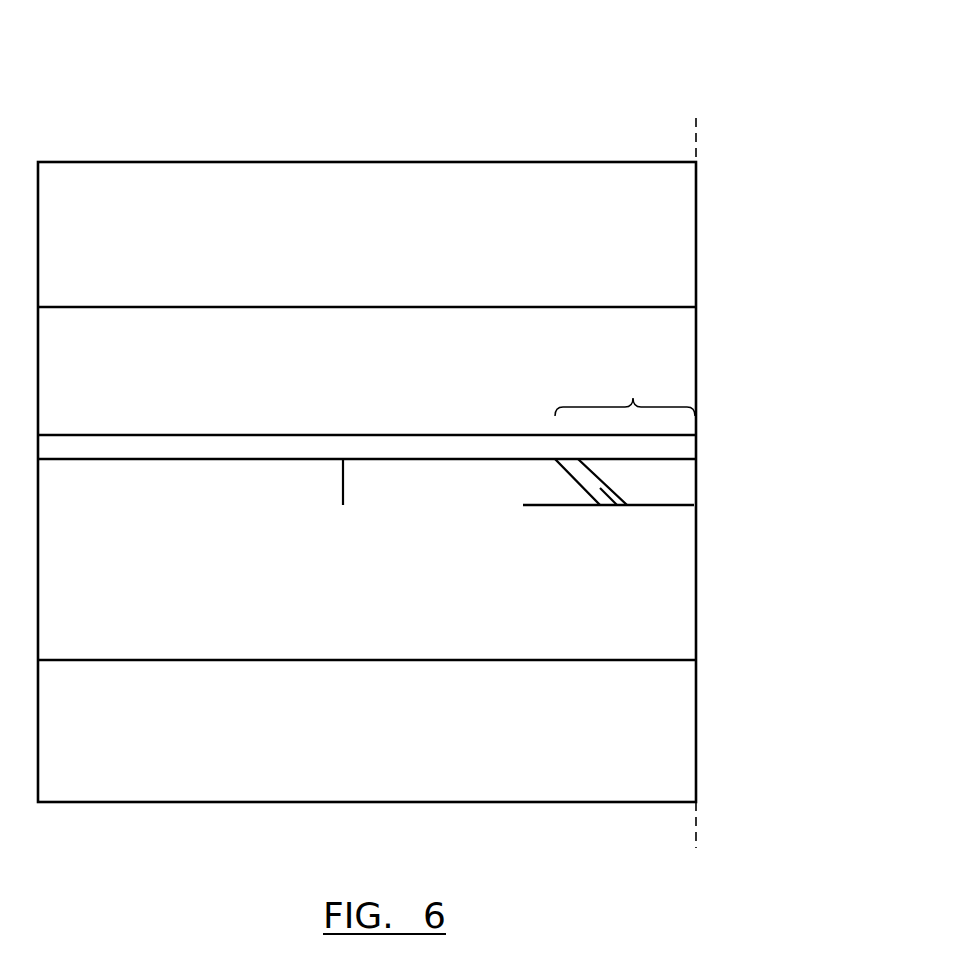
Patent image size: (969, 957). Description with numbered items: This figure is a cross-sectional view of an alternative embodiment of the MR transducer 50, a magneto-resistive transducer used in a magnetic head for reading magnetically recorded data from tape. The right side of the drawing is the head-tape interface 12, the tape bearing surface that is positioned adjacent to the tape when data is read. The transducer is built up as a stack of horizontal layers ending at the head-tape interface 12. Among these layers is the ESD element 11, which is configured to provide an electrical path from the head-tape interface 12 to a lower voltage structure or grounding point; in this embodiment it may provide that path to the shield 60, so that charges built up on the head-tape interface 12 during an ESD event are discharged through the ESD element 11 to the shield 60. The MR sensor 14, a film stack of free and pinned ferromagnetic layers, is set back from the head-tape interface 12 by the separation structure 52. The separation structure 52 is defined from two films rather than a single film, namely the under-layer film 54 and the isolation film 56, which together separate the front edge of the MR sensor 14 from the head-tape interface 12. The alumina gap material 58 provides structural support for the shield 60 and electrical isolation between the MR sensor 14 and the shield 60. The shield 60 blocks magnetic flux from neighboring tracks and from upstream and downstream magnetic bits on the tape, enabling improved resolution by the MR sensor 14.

The MR transducer 50 is at (183, 95).
The head-tape interface 12 is at (696, 142).
The shield 60 is at (675, 235).
The ESD element 11 is at (687, 446).
The separation structure 52 is at (625, 390).
The isolation film 56 is at (673, 491).
The under-layer film 54 is at (697, 517).
The MR sensor 14 is at (533, 487).
The alumina gap material 58 is at (670, 605).